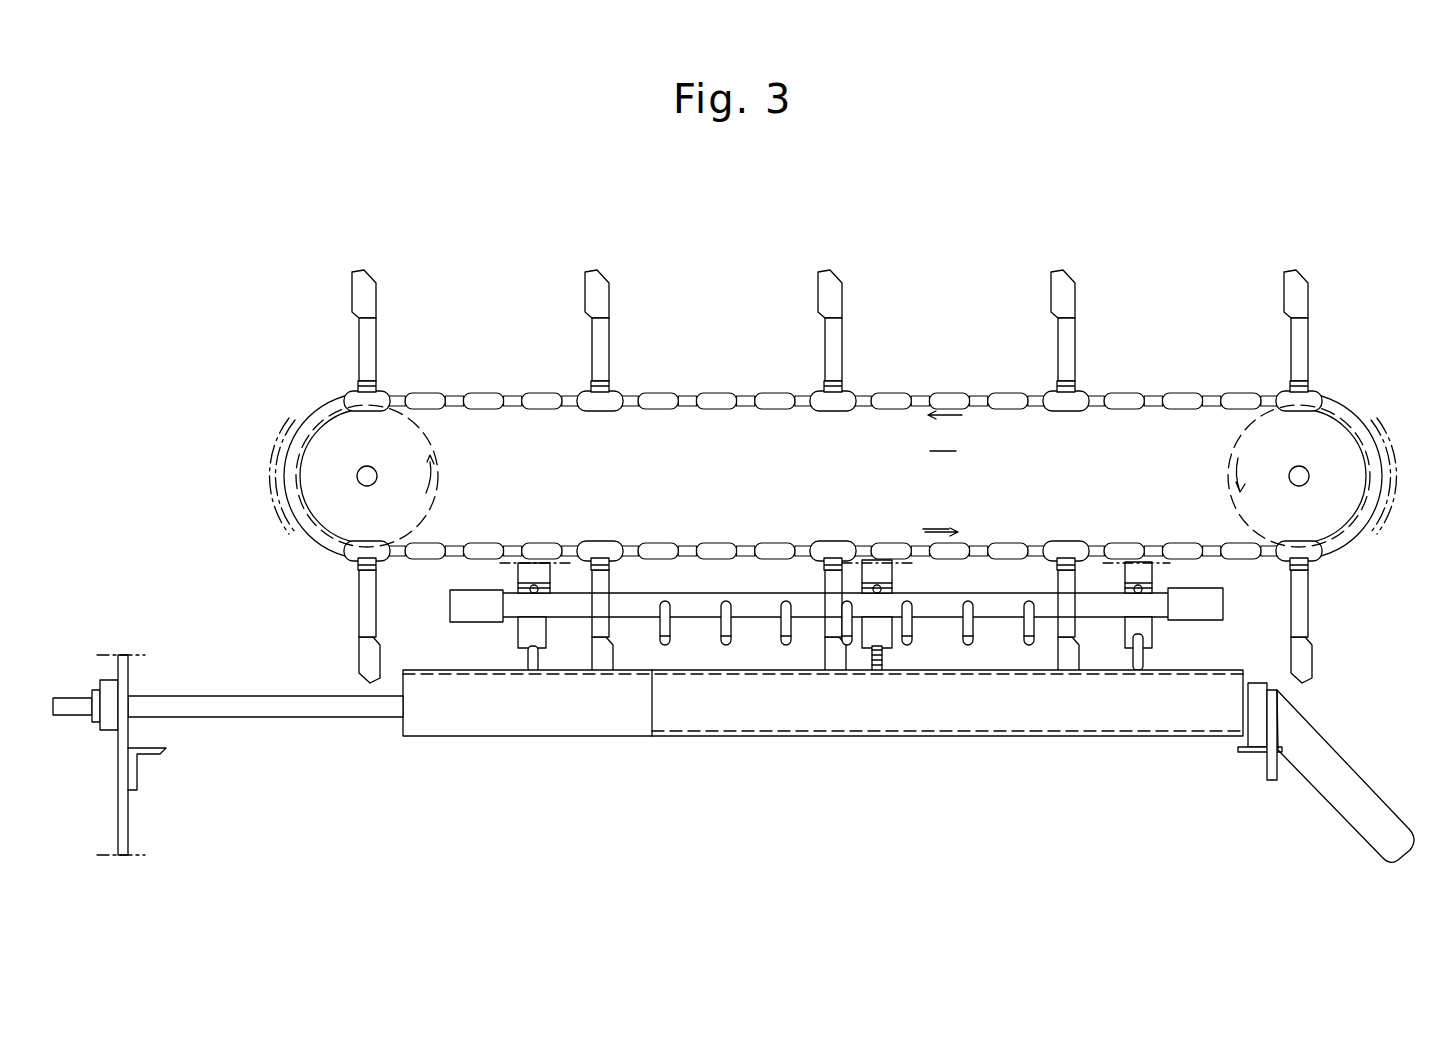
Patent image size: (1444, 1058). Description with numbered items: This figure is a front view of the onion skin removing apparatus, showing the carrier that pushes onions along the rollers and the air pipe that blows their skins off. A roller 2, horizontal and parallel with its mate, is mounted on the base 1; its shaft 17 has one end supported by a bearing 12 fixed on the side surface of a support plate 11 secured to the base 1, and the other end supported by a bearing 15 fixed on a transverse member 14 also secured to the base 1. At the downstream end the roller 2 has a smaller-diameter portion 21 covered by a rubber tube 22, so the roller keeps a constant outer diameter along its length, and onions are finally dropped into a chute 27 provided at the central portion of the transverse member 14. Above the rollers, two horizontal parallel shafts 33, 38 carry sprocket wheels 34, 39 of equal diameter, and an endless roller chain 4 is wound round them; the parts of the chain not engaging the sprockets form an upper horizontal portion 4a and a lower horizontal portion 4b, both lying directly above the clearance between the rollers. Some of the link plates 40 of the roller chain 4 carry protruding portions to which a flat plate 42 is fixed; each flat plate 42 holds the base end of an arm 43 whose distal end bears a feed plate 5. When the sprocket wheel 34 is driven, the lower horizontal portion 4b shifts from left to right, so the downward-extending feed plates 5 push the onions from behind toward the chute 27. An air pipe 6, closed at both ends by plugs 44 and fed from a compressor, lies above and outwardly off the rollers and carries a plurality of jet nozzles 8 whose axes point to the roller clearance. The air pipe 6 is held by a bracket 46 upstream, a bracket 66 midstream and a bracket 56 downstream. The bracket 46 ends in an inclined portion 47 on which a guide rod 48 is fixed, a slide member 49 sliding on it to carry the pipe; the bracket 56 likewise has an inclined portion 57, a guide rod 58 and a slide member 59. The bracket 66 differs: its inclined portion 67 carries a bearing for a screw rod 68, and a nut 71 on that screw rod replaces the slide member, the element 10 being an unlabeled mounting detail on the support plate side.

The base 1 is at (112, 784).
The roller 2 is at (543, 742).
The endless roller chain 4 is at (693, 388).
The upper horizontal portion 4a is at (942, 403).
The lower horizontal portion 4b is at (766, 560).
The feed plate 5 is at (372, 290).
The air pipe 6 is at (642, 620).
The jet nozzle 8 is at (722, 640).
The bracket 10 is at (140, 748).
The support plate 11 is at (122, 824).
The bearing 12 is at (108, 686).
The transverse member 14 is at (1270, 745).
The bearing 15 is at (1262, 712).
The shaft 17 is at (272, 702).
The smaller-diameter portion 21 is at (722, 736).
The rubber tube 22 is at (998, 720).
The chute 27 is at (1345, 795).
The shaft 33 is at (357, 478).
The sprocket wheel 34 is at (293, 440).
The shaft 38 is at (1305, 480).
The sprocket wheel 39 is at (1378, 462).
The link plate 40 is at (358, 416).
The flat plate 42 is at (372, 386).
The arm 43 is at (365, 350).
The plug 44 is at (470, 608).
The bracket 46 is at (542, 552).
The inclined portion 47 is at (520, 585).
The guide rod 48 is at (530, 640).
The slide member 49 is at (528, 660).
The bracket 56 is at (1136, 551).
The inclined portion 57 is at (1117, 590).
The guide rod 58 is at (1135, 658).
The slide member 59 is at (1150, 622).
The bracket 66 is at (890, 552).
The inclined portion 67 is at (900, 588).
The screw rod 68 is at (880, 640).
The nut 71 is at (884, 656).